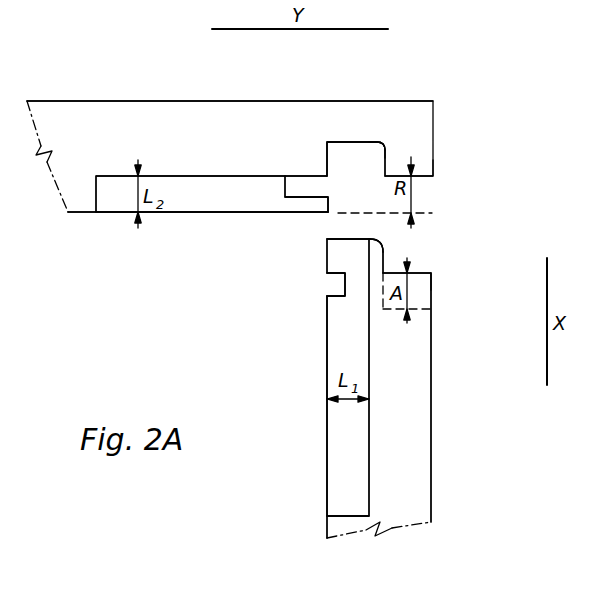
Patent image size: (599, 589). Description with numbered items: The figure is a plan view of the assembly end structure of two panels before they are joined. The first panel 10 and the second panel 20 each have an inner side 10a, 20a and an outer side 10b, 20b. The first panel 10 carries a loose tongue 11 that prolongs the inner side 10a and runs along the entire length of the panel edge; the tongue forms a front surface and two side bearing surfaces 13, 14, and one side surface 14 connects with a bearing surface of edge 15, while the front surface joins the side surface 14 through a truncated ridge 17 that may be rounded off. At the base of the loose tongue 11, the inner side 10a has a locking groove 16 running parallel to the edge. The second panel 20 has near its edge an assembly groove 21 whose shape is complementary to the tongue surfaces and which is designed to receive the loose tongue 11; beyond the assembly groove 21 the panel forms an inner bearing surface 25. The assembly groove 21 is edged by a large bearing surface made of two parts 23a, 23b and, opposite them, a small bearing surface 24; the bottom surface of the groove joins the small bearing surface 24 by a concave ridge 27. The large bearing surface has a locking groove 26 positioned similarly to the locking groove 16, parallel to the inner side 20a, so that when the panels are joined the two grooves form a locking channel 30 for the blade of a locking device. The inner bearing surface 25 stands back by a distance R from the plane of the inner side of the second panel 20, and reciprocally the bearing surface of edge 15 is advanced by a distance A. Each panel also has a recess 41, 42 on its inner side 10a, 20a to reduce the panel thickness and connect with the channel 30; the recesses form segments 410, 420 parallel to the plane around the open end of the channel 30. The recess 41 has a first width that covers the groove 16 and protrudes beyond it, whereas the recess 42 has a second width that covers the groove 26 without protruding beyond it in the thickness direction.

The first panel 10 is at (410, 462).
The inner side of first panel 10a is at (326, 437).
The outer side of first panel 10b is at (432, 380).
The loose tongue 11 is at (361, 267).
The side bearing surface 13 is at (327, 256).
The side bearing surface 14 is at (390, 264).
The bearing surface of edge 15 is at (428, 271).
The locking groove 16 is at (337, 285).
The truncated ridge 17 is at (394, 237).
The second panel 20 is at (93, 121).
The inner side of second panel 20a is at (85, 214).
The outer side of second panel 20b is at (151, 101).
The assembly groove 21 is at (374, 197).
The part of large bearing surface 23a is at (328, 157).
The part of large bearing surface 23b is at (327, 207).
The small bearing surface 24 is at (381, 148).
The inner bearing surface 25 is at (421, 179).
The locking groove 26 is at (297, 187).
The concave ridge 27 is at (385, 146).
The locking channel 30 is at (315, 236).
The recess of first panel 41 is at (346, 480).
The recess of second panel 42 is at (193, 190).
The segment 410 is at (350, 313).
The segment 420 is at (237, 200).